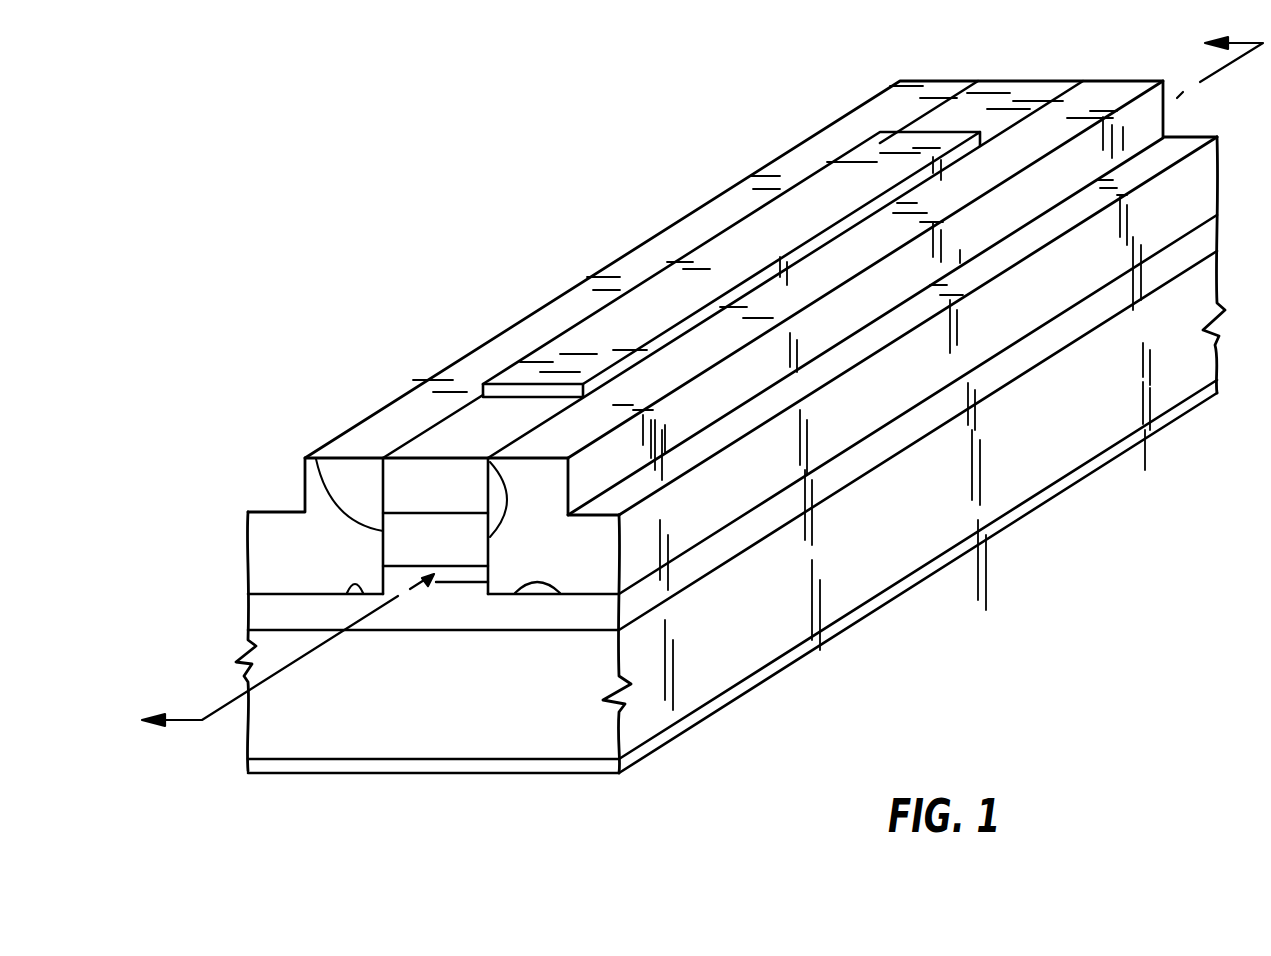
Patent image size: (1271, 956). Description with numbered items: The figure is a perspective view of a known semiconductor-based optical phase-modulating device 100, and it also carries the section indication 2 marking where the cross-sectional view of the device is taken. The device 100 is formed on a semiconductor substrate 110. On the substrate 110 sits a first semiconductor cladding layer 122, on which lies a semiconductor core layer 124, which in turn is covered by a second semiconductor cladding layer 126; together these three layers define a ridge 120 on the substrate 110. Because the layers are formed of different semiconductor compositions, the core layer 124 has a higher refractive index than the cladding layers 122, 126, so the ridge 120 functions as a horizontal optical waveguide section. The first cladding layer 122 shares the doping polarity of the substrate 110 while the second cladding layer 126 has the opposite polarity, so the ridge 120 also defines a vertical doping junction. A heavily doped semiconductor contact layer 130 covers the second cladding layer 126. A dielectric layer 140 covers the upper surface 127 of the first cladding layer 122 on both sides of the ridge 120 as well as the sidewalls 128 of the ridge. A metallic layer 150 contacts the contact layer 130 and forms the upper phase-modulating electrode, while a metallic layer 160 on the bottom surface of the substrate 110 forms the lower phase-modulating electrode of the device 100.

The phase-modulating device 100 is at (651, 450).
The semiconductor substrate 110 is at (280, 655).
The ridge 120 is at (647, 417).
The first semiconductor cladding layer 122 is at (277, 605).
The semiconductor core layer 124 is at (395, 575).
The second semiconductor cladding layer 126 is at (403, 549).
The upper surface 127 is at (348, 590).
The sidewalls 128 is at (317, 497).
The semiconductor contact layer 130 is at (408, 483).
The dielectric layer 140 is at (305, 490).
The metallic layer 150 is at (663, 283).
The metallic layer 160 is at (317, 765).
The section line 2- 2 is at (689, 386).